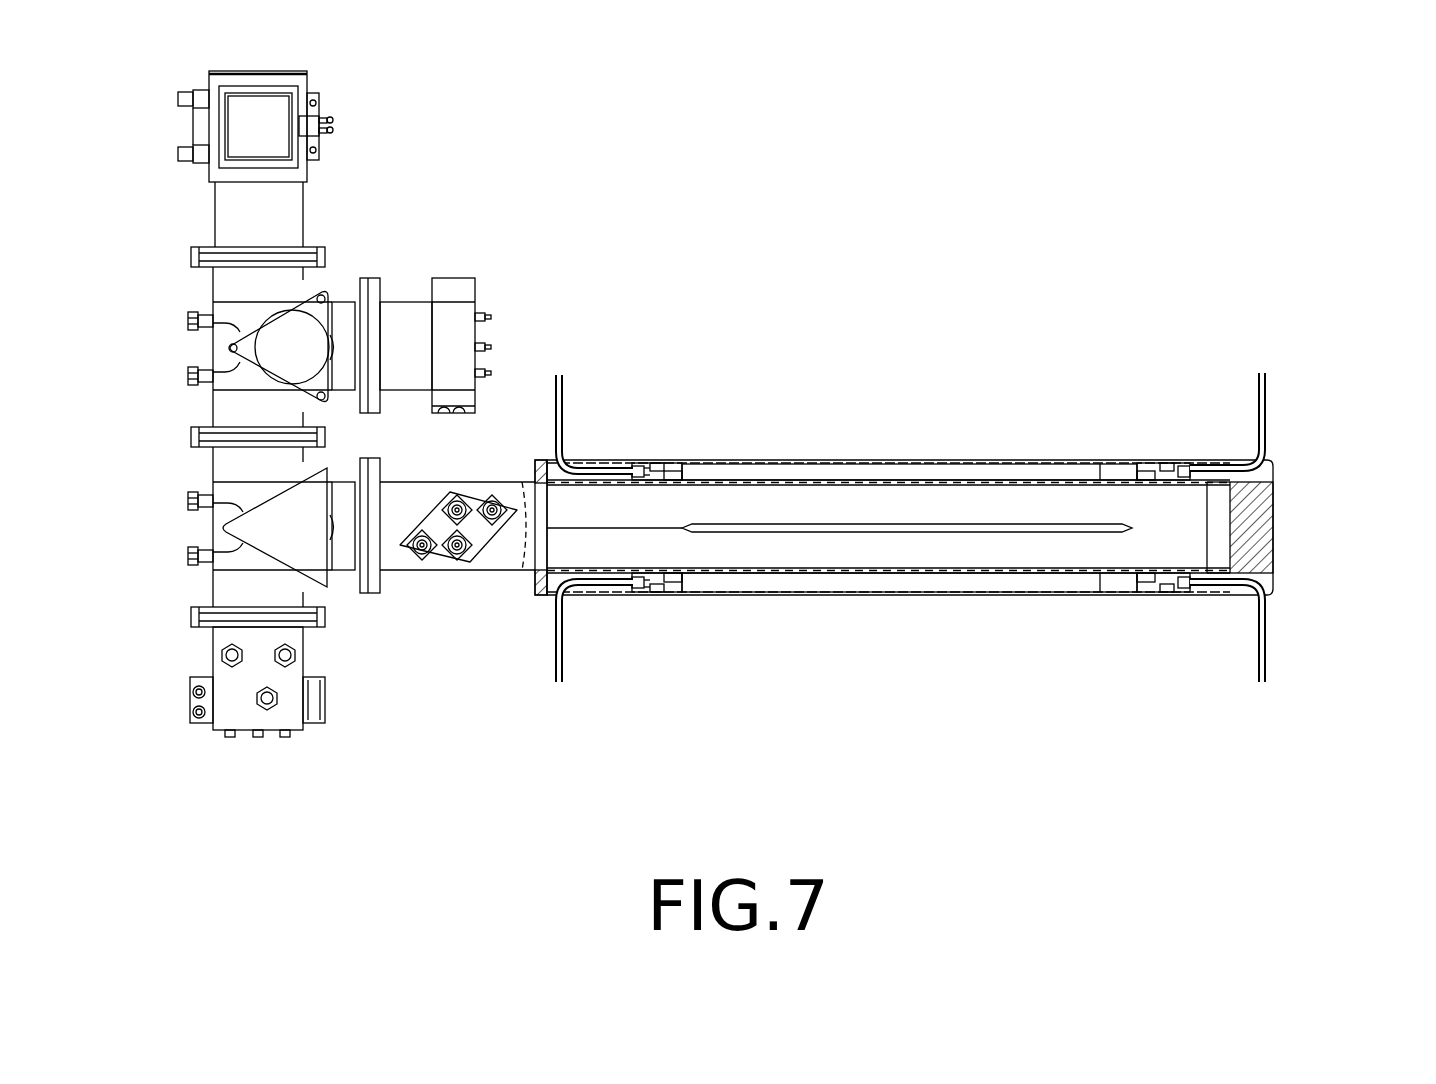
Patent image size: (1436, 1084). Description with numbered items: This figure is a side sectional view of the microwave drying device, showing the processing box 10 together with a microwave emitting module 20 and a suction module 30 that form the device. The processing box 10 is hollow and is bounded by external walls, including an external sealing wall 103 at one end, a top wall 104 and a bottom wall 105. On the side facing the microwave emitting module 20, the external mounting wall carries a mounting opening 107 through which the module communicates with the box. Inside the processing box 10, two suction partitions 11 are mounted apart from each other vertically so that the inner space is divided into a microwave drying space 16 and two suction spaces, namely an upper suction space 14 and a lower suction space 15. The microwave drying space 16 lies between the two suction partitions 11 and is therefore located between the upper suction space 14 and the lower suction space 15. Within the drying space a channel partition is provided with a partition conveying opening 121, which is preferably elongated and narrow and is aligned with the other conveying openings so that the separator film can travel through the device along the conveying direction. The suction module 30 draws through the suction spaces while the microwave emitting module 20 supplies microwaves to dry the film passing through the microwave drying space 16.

The processing box 10 is at (889, 498).
The suction partition 11 is at (720, 483).
The upper suction space 14 is at (865, 473).
The lower suction space 15 is at (907, 582).
The microwave drying space 16 is at (1002, 580).
The microwave emitting module 20 is at (417, 178).
The suction module 30 is at (1267, 415).
The external sealing wall 103 is at (1273, 535).
The top wall 104 is at (768, 460).
The bottom wall 105 is at (795, 593).
The mounting opening 107 is at (540, 549).
The partition conveying opening 121 is at (1057, 527).